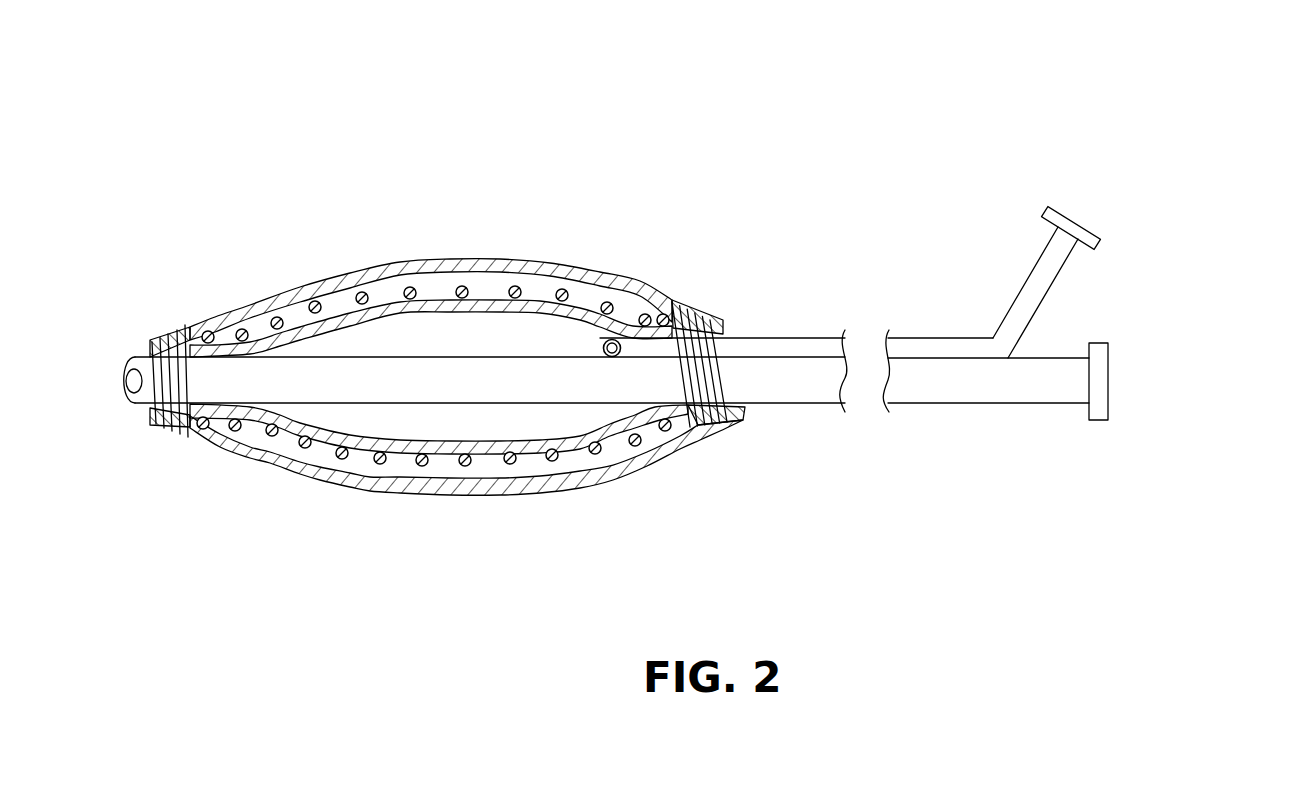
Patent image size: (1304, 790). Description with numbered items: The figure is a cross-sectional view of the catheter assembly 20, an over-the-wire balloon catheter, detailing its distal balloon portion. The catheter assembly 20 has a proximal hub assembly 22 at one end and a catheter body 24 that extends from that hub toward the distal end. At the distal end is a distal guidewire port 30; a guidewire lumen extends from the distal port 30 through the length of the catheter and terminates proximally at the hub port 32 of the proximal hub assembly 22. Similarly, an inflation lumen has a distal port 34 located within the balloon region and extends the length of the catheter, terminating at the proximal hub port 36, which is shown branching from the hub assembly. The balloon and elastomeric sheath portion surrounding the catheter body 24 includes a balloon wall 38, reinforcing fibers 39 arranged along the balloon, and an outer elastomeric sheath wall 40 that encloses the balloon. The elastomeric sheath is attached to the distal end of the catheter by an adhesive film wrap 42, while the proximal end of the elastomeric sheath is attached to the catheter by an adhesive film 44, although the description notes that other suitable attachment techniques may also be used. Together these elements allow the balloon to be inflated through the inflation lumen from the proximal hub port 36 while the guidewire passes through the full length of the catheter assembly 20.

The catheter assembly 20 is at (686, 146).
The proximal hub assembly 22 is at (1175, 291).
The catheter body 24 is at (785, 337).
The distal guidewire port 30 is at (128, 397).
The hub port 32 is at (1108, 380).
The distal port 34 is at (603, 348).
The proximal hub port 36 is at (1086, 222).
The balloon wall 38 is at (262, 338).
The reinforcing fibers 39 is at (408, 288).
The elastomeric sheath wall 40 is at (574, 268).
The adhesive film wrap 42 is at (150, 355).
The adhesive film 44 is at (724, 323).